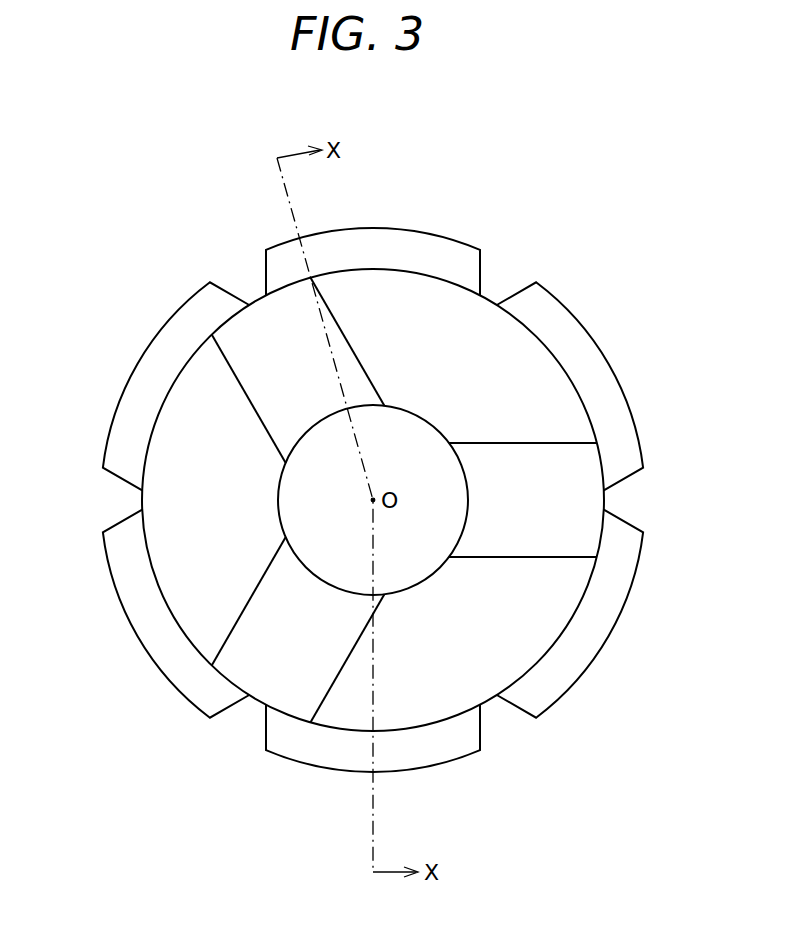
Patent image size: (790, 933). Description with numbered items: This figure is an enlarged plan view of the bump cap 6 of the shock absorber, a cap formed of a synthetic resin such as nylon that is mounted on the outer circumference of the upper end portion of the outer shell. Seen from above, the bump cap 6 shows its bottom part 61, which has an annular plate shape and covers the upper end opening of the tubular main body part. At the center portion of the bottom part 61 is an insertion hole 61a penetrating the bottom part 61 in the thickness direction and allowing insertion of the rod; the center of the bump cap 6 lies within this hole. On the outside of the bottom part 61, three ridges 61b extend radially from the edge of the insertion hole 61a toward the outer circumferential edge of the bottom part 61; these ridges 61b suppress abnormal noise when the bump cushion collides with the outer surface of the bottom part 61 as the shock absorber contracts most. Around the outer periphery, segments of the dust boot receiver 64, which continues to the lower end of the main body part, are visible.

The bump cap 6 is at (370, 492).
The bottom part 61 is at (373, 464).
The insertion hole 61a is at (279, 490).
The ridges 61b is at (245, 370).
The dust boot receiver 64 is at (398, 248).